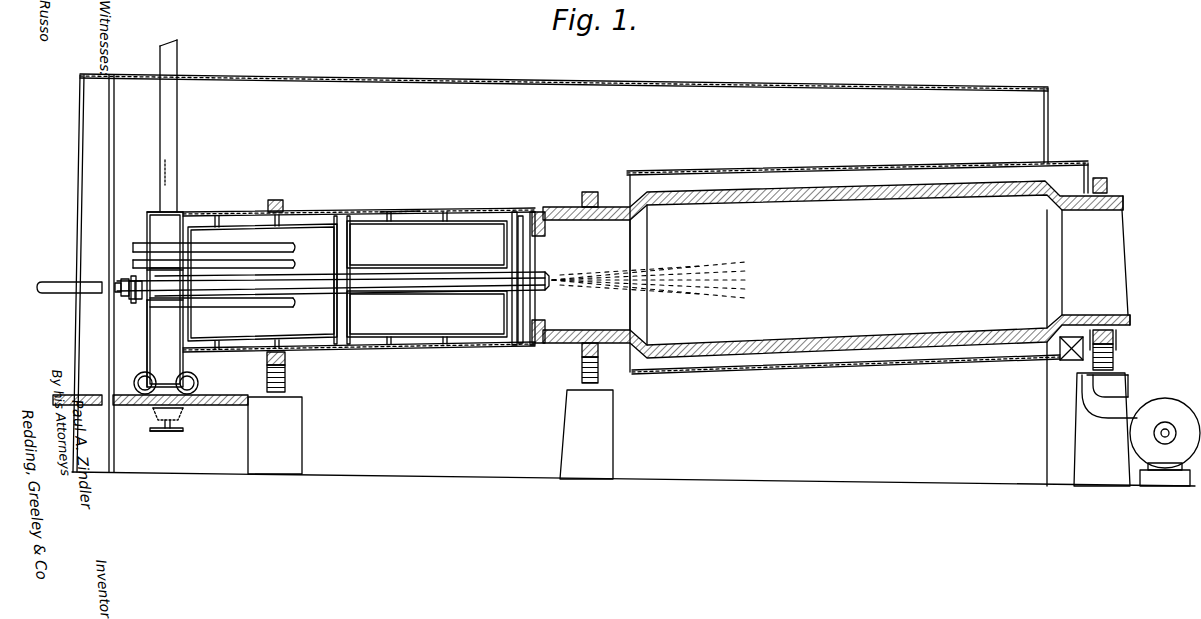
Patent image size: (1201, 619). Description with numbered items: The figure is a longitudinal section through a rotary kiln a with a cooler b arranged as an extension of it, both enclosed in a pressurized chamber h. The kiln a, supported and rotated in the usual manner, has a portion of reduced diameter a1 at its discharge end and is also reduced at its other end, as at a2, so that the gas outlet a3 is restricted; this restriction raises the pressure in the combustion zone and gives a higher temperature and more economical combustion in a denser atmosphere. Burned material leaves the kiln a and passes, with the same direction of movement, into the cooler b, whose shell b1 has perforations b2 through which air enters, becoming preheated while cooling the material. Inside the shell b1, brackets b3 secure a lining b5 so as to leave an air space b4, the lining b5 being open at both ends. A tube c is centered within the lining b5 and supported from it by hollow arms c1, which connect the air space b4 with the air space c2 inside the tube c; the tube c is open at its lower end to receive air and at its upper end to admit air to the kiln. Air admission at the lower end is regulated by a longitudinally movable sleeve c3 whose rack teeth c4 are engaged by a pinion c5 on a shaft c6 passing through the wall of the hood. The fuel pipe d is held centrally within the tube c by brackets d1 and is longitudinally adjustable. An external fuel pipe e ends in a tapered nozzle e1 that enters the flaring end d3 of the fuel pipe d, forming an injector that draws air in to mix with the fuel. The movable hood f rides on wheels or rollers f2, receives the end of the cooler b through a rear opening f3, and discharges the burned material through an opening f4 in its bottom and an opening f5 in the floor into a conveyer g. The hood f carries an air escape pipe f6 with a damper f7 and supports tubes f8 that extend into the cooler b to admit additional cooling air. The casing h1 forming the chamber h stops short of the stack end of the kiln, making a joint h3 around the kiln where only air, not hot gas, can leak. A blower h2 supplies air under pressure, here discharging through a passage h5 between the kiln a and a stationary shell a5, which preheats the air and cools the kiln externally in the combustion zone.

The casing h1 is at (684, 88).
The chamber h is at (857, 245).
The blower h2 is at (1165, 405).
The joint h3 is at (1102, 178).
The passage h5 is at (958, 362).
The rotary kiln a is at (858, 190).
The portion of reduced diameter a1 is at (606, 207).
The reduced end a2 is at (1112, 196).
The gas outlet a3 is at (1087, 348).
The stationary shell a5 is at (862, 352).
The cooler b is at (359, 300).
The shell b1 is at (400, 211).
The perforations b2 is at (338, 216).
The brackets b3 is at (325, 215).
The air space b4 is at (266, 212).
The lining b5 is at (516, 212).
The tube c is at (505, 350).
The hollow arms c1 is at (343, 263).
The air space c2 is at (424, 268).
The sleeve c3 is at (153, 340).
The rack teeth c4 is at (165, 299).
The pinion c5 is at (166, 262).
The shaft c6 is at (162, 266).
The fuel pipe d is at (434, 292).
The brackets d1 is at (536, 256).
The flaring end d3 is at (118, 282).
The external fuel pipe e is at (53, 283).
The nozzle e1 is at (130, 296).
The hood f is at (140, 308).
The wheels or rollers f2 is at (170, 408).
The opening f3 is at (200, 360).
The opening f4 is at (162, 432).
The opening f5 is at (186, 430).
The air escape pipe f6 is at (178, 126).
The damper f7 is at (148, 195).
The tubes f8 is at (282, 262).
The conveyer g is at (176, 432).